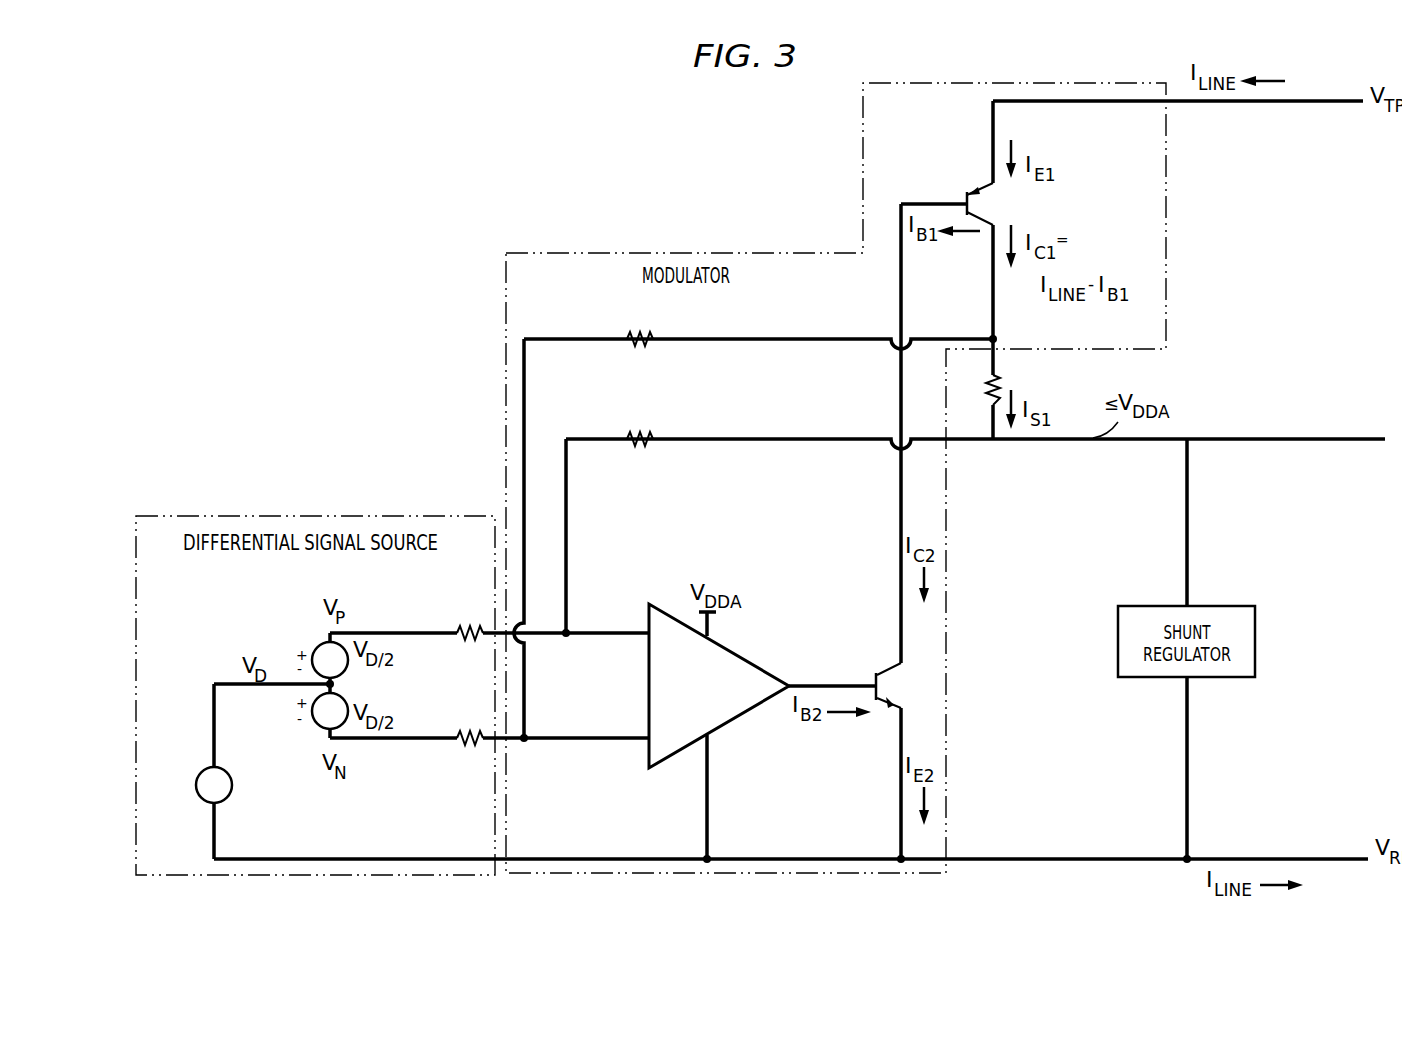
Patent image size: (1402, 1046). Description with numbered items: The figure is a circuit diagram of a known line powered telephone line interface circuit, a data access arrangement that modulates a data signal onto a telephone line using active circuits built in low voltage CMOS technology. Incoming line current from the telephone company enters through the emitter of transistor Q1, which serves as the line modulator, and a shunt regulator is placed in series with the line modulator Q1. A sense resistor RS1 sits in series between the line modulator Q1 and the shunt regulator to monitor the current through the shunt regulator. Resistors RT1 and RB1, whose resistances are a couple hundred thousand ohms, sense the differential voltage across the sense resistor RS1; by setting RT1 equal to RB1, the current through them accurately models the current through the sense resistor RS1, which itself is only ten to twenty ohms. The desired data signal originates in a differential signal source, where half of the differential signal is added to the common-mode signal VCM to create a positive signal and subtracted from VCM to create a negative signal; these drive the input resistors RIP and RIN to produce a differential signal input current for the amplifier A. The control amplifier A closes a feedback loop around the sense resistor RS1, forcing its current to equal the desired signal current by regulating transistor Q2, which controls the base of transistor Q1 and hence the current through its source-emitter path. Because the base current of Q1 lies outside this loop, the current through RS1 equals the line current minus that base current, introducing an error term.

The transistor Q1 is at (993, 204).
The transistor Q2 is at (906, 685).
The resistor RT1 is at (642, 319).
The resistor RB1 is at (643, 419).
The sense resistor RS1 is at (976, 387).
The input resistor RIP is at (470, 649).
The input resistor RIN is at (472, 719).
The common-mode signal VCM is at (238, 785).
The amplifier A is at (719, 686).